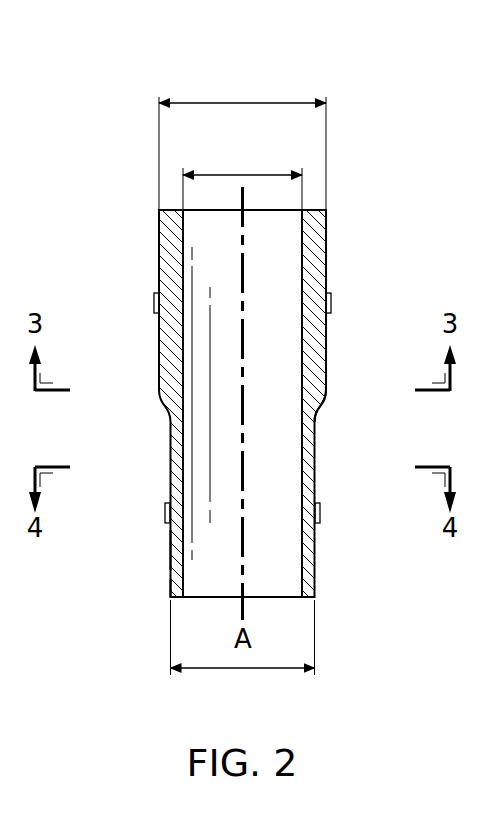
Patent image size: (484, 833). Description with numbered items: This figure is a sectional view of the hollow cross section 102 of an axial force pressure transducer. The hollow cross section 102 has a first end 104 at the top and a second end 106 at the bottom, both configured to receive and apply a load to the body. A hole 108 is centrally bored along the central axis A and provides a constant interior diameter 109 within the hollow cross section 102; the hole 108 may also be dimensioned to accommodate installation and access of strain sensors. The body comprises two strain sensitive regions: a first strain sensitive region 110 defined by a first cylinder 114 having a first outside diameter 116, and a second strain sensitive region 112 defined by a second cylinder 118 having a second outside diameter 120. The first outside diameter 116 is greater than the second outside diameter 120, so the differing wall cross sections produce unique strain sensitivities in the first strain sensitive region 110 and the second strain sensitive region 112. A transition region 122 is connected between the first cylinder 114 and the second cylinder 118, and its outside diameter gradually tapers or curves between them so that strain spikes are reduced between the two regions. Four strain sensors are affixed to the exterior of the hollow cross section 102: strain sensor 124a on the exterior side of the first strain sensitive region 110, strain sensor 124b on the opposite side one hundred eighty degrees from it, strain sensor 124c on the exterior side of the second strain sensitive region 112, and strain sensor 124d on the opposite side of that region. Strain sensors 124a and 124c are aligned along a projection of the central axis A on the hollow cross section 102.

The hollow cross section 102 is at (108, 72).
The first end 104 is at (277, 210).
The second end 106 is at (285, 597).
The hole 108 is at (292, 340).
The constant interior diameter 109 is at (243, 175).
The first strain sensitive region 110 is at (159, 258).
The second strain sensitive region 112 is at (170, 588).
The first cylinder 114 is at (159, 226).
The first outside diameter 116 is at (242, 103).
The second cylinder 118 is at (170, 548).
The second outside diameter 120 is at (238, 672).
The transition region 122 is at (322, 410).
The strain sensor 124a is at (154, 302).
The strain sensor 124b is at (331, 302).
The strain sensor 124c is at (165, 512).
The strain sensor 124d is at (320, 513).